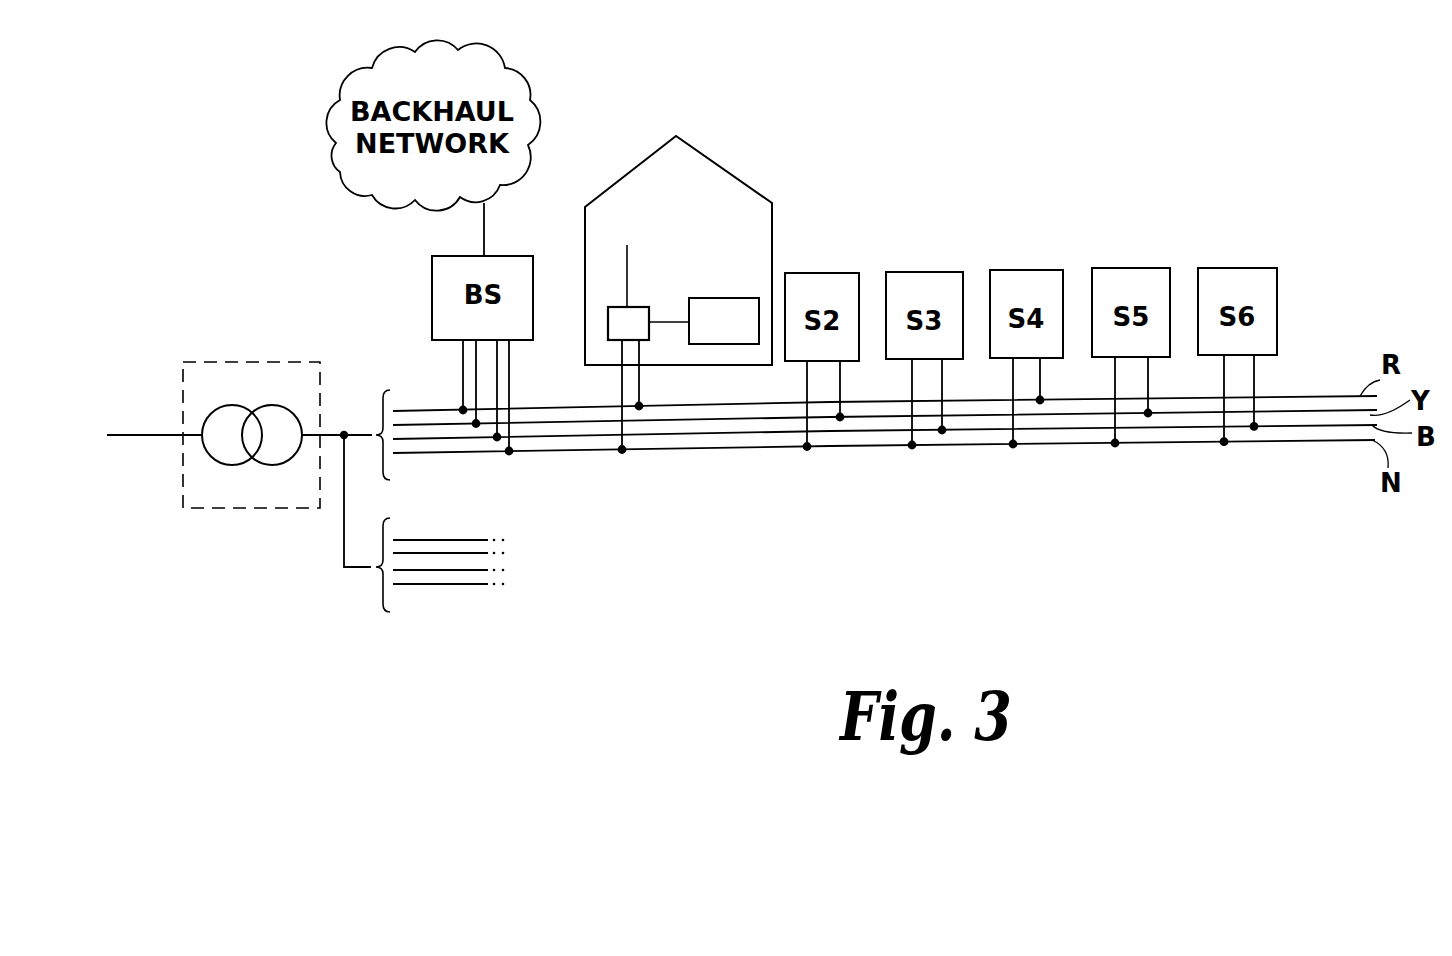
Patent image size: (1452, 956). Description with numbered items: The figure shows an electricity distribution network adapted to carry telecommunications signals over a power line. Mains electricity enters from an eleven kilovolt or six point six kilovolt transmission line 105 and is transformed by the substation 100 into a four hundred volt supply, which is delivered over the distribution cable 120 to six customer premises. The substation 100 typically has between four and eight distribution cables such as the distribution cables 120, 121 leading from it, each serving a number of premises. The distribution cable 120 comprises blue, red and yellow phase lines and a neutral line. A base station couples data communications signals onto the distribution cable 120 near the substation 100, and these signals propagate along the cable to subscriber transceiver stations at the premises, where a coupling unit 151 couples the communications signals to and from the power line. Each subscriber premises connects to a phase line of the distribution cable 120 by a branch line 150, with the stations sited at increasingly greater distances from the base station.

The substation 100 is at (189, 402).
The transmission line 105 is at (137, 437).
The distribution cable 120 is at (378, 410).
The distribution cable 121 is at (382, 593).
The branch line 150 is at (650, 294).
The coupling unit 151 is at (641, 306).